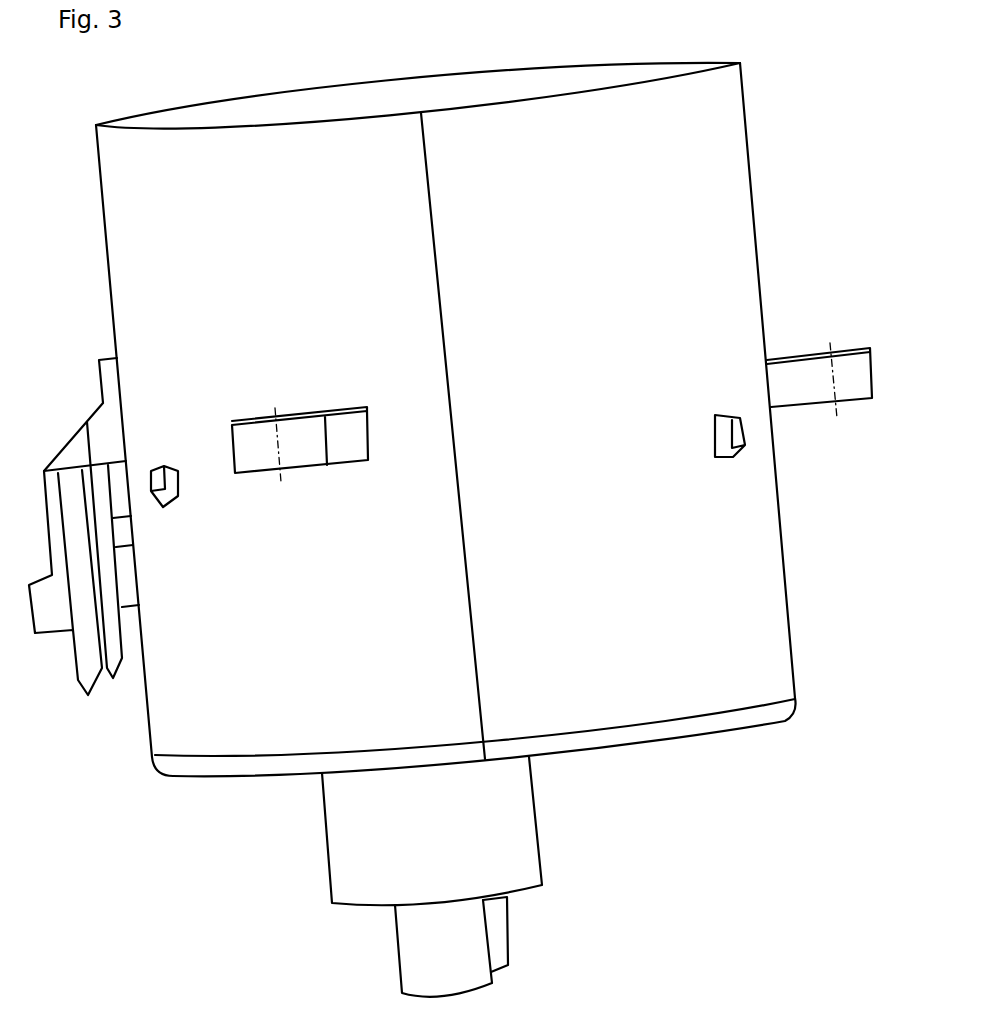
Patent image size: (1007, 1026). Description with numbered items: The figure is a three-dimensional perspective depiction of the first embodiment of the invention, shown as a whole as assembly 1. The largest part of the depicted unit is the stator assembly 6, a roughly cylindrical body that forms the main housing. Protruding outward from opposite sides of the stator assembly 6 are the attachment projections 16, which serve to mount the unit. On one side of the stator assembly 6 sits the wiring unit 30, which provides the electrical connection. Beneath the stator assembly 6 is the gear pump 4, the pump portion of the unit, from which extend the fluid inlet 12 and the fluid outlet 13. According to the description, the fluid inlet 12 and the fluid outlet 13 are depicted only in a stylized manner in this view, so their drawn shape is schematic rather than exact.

The electric motor 1 is at (448, 526).
The stator assembly 6 is at (618, 259).
The attachment projections 16 is at (253, 444).
The wiring unit 30 is at (82, 587).
The gear pump 4 is at (505, 829).
The fluid outlet 13 is at (495, 925).
The fluid inlet 12 is at (468, 960).